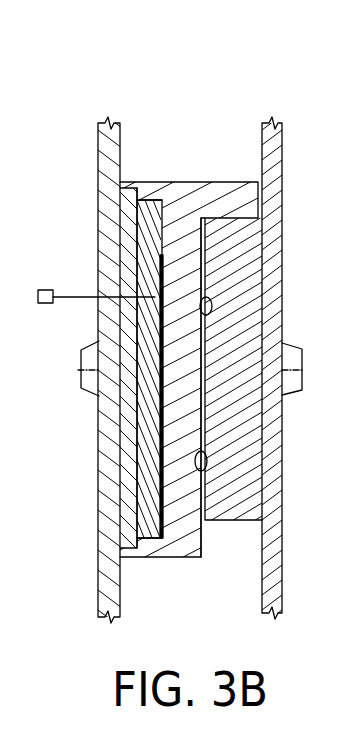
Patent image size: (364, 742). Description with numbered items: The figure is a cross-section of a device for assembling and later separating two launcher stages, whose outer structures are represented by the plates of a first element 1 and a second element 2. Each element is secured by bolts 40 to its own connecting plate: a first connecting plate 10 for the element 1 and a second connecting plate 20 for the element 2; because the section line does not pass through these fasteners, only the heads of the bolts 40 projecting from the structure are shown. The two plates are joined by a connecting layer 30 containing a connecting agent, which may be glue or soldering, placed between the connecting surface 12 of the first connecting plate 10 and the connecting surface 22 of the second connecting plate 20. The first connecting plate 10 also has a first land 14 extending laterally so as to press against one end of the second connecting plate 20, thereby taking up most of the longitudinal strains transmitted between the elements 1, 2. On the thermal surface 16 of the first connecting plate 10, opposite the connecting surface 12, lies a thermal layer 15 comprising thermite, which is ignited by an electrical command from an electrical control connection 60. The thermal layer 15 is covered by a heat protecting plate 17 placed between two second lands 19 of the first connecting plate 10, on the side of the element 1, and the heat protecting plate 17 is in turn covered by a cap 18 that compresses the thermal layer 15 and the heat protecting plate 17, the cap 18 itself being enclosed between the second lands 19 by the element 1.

The element 1 is at (110, 191).
The element 2 is at (270, 540).
The connecting plate 10 is at (170, 235).
The connecting surface 12 is at (200, 314).
The first land 14 is at (245, 207).
The thermal layer 15 is at (160, 282).
The thermal surface 16 is at (157, 414).
The heat protecting plate 17 is at (150, 453).
The cap 18 is at (128, 498).
The second lands 19 is at (152, 190).
The connecting plate 20 is at (250, 418).
The connecting surface 22 is at (204, 472).
The connecting layer 30 is at (207, 275).
The bolts 40 is at (298, 347).
The electrical control connection 60 is at (38, 289).